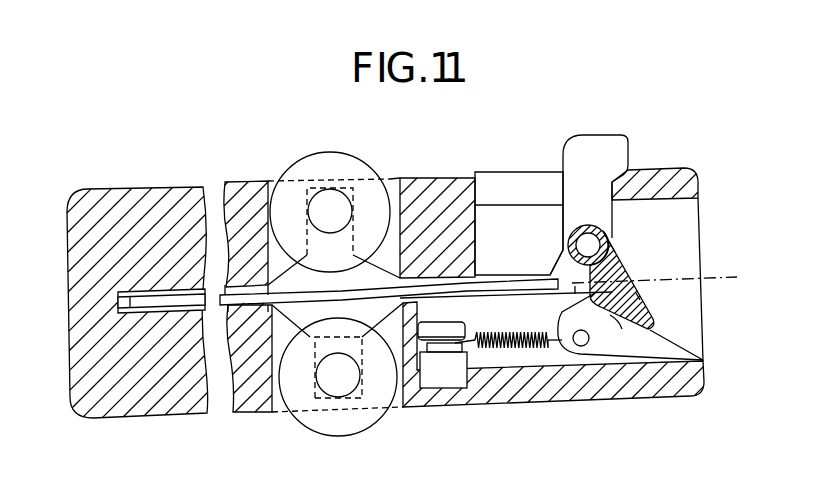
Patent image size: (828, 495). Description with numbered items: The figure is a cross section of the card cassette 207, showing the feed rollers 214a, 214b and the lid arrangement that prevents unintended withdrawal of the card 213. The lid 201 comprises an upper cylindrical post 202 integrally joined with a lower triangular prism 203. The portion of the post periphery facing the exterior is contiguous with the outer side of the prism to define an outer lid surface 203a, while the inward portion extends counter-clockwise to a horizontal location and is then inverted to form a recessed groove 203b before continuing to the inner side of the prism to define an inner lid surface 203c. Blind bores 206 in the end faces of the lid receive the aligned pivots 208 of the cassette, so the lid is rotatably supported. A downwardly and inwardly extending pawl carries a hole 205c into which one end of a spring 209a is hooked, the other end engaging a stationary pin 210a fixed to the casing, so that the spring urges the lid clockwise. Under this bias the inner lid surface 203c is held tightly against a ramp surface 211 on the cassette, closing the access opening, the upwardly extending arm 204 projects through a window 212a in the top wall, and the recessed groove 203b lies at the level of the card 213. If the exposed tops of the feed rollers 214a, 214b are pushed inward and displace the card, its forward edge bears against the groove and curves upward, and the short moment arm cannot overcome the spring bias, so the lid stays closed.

The lid 201 is at (636, 266).
The cylindrical post 202 is at (585, 223).
The triangular prism 203 is at (645, 318).
The outer lid surface 203a is at (640, 300).
The recessed groove 203b is at (610, 253).
The inner lid surface 203c is at (622, 329).
The upwardly extending arm 204 is at (597, 140).
The hole 205c is at (584, 344).
The blind bore 206 is at (563, 253).
The cassette 207 is at (401, 177).
The pivot 208 is at (593, 237).
The spring 209a is at (517, 341).
The stationary pin 210a is at (443, 365).
The ramp surface 211 is at (680, 347).
The window 212a is at (500, 181).
The card 213 is at (150, 300).
The feed roller 214a is at (347, 162).
The feed roller 214b is at (340, 426).